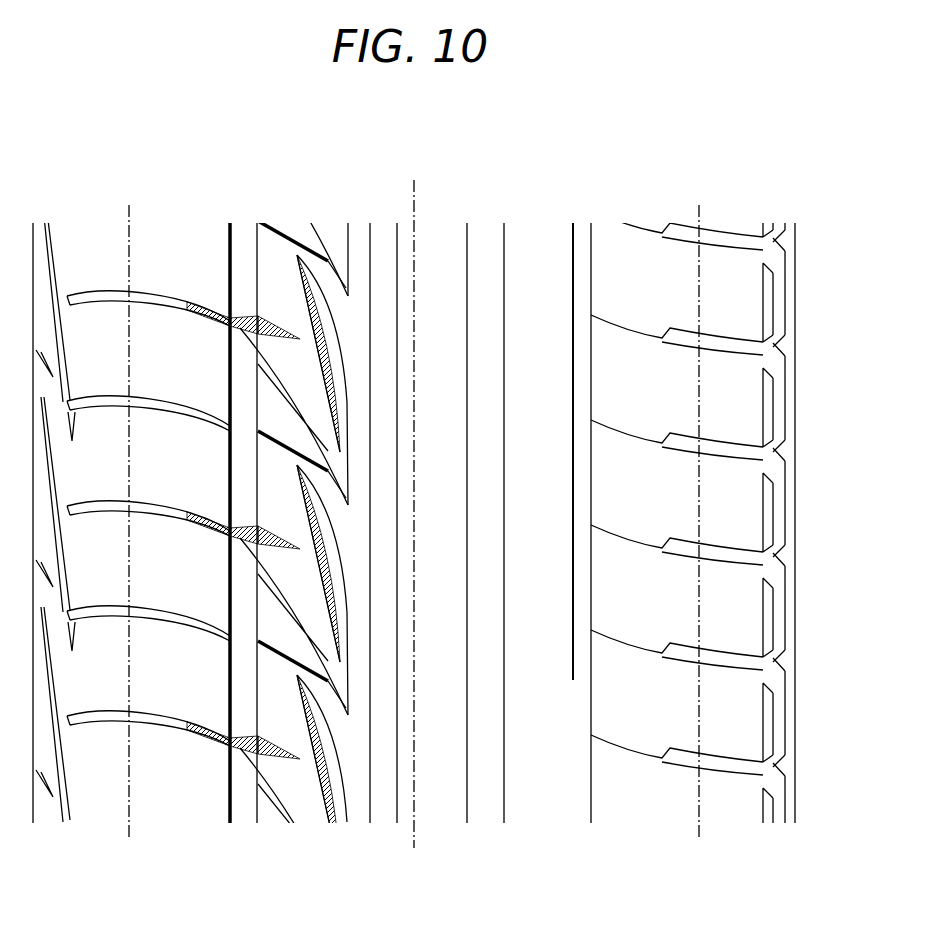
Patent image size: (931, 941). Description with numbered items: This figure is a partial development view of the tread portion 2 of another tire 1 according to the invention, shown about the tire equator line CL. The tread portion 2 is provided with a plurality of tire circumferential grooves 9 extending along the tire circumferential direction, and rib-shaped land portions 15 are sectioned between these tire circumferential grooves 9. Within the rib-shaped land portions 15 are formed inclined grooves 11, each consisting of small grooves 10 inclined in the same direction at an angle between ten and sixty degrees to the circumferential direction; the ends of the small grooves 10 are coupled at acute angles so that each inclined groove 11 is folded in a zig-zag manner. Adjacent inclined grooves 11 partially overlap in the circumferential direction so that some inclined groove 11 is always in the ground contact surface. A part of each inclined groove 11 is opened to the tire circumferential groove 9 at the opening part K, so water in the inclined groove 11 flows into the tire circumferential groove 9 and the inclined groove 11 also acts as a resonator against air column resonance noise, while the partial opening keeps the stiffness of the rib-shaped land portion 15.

The tire 1 is at (753, 158).
The tread portion 2 is at (663, 200).
The tire circumferential groove 9 is at (243, 236).
The small groove 10 is at (312, 220).
The inclined groove 11 is at (343, 680).
The rib-shaped land portion 15 is at (316, 836).
The opening part K is at (258, 357).
The tire equator center line CL is at (414, 500).